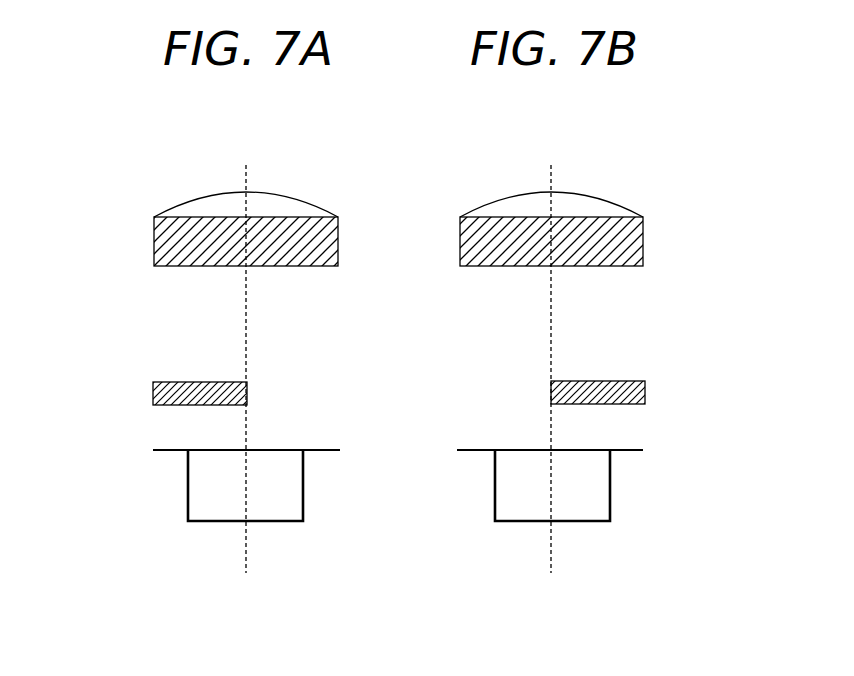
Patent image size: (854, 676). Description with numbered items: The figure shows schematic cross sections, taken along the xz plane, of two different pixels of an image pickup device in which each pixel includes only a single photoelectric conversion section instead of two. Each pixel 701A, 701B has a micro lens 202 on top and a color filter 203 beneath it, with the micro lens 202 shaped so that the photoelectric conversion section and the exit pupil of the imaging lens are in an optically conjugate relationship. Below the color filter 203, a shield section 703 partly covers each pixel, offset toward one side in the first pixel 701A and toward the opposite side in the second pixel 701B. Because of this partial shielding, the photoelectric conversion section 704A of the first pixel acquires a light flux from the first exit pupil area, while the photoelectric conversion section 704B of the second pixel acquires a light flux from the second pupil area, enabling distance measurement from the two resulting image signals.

In FIG. 7A, the micro lens 202 is at (188, 203).
In FIG. 7B, the micro lens 202 is at (607, 201).
In FIG. 7A, the color filter 203 is at (154, 235).
In FIG. 7B, the color filter 203 is at (643, 237).
In FIG. 7A, the pixel 701A is at (246, 167).
In FIG. 7B, the optical axis 701B is at (551, 167).
In FIG. 7A, the shield section 703 is at (152, 390).
In FIG. 7B, the shield section 703 is at (645, 388).
In FIG. 7A, the photoelectric conversion section 704A is at (212, 522).
In FIG. 7B, the photoelectric conversion section 704B is at (518, 522).